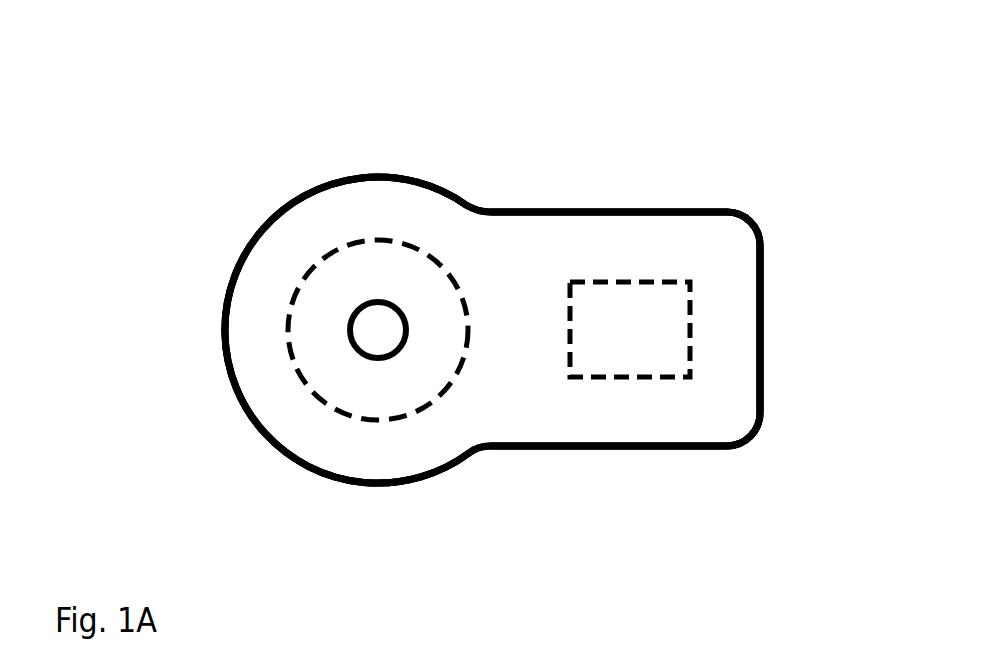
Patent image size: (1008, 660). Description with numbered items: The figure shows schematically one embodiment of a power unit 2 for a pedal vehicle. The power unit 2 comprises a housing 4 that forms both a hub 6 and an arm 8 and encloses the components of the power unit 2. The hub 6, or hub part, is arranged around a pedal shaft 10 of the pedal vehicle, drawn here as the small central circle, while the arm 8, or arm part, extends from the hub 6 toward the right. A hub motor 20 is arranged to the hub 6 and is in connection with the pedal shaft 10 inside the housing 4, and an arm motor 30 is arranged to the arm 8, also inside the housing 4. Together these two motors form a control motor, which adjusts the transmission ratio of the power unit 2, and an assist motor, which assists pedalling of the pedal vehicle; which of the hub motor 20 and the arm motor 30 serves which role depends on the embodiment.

The power unit 2 is at (699, 103).
The housing 4 is at (314, 186).
The hub 6 is at (365, 452).
The arm 8 is at (655, 418).
The pedal shaft 10 is at (384, 302).
The hub motor 20 is at (288, 323).
The arm motor 30 is at (690, 318).